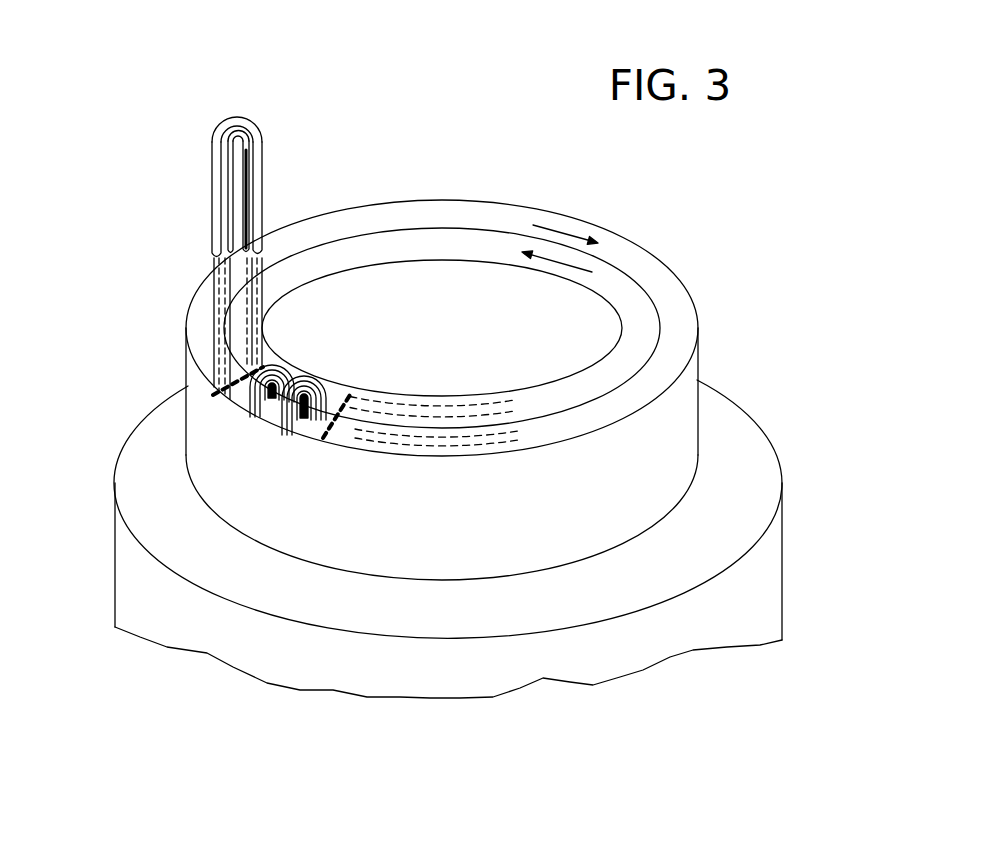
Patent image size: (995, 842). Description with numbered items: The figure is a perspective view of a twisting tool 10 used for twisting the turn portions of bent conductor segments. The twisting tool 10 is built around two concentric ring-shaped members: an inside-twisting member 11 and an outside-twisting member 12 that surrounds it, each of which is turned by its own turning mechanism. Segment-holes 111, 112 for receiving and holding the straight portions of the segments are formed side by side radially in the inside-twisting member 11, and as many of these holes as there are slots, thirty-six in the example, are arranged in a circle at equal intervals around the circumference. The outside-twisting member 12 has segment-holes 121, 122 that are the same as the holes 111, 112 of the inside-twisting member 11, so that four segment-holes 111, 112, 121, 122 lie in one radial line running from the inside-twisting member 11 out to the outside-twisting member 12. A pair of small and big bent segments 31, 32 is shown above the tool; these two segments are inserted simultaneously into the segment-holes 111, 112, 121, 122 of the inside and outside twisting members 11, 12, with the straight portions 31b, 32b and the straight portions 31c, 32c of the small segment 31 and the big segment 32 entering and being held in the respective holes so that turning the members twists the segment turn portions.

The twisting tool 10 is at (551, 208).
The inside-twisting member 11 is at (626, 281).
The outside-twisting member 12 is at (681, 318).
The segment 31 is at (248, 152).
The straight portion 31b is at (254, 205).
The straight portion 31c is at (228, 231).
The segment 32 is at (240, 118).
The straight portion 32b is at (261, 178).
The straight portion 32c is at (218, 177).
The segment-hole 111 is at (226, 318).
The segment-hole 112 is at (223, 344).
The segment-hole 121 is at (223, 362).
The segment-hole 122 is at (197, 383).